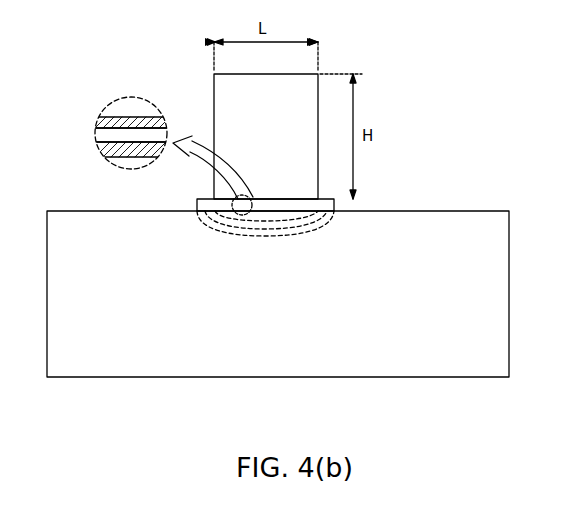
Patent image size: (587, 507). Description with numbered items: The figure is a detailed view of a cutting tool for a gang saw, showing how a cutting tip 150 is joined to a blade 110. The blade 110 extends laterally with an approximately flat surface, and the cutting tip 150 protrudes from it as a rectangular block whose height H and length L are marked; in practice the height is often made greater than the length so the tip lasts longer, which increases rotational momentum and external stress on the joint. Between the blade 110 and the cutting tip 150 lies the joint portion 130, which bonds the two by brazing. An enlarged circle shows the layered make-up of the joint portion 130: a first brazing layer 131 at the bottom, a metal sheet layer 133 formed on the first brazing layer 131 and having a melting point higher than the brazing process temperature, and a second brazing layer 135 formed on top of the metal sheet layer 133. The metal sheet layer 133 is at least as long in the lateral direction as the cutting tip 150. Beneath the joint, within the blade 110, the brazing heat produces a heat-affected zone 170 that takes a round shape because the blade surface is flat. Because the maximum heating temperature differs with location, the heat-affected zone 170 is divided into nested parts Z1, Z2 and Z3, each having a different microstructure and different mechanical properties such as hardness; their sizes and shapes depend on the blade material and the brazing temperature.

The blade 110 is at (386, 372).
The joint portion 130 is at (197, 203).
The first brazing layer 131 is at (100, 145).
The metal sheet layer 133 is at (97, 136).
The second brazing layer 135 is at (100, 122).
The cutting tip 150 is at (214, 80).
The heat-affected zone 170 is at (258, 233).
The first heat-affected part Z1 is at (228, 217).
The second heat-affected part Z2 is at (212, 221).
The third heat-affected part Z3 is at (332, 226).